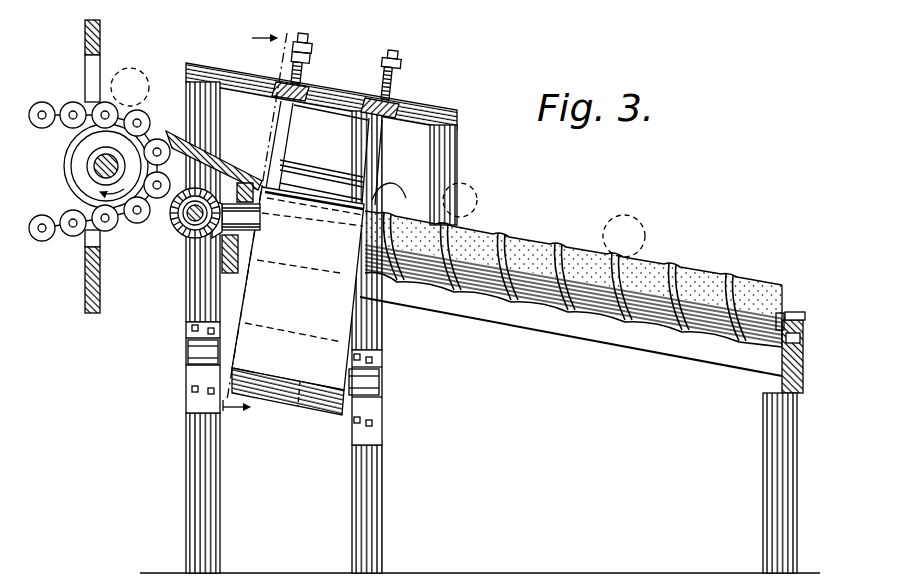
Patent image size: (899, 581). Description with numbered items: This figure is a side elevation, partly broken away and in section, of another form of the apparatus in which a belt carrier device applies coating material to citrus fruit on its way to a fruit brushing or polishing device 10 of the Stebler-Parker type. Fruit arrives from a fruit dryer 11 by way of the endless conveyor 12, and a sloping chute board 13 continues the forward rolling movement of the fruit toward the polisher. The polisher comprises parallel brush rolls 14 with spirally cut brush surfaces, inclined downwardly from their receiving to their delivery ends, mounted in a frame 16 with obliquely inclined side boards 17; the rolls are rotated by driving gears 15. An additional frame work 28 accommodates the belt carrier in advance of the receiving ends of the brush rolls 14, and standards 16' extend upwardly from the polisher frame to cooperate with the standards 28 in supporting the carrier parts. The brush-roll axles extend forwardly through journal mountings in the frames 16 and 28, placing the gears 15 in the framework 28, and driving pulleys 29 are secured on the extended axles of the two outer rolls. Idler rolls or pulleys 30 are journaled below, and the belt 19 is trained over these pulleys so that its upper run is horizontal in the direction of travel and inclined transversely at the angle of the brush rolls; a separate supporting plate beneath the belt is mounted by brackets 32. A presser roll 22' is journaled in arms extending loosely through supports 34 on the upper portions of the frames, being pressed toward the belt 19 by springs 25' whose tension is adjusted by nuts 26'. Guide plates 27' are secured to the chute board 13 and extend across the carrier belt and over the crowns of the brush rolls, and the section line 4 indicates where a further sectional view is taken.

The section line 4- 4 is at (263, 224).
The fruit brushing or polishing device 10 is at (540, 240).
The fruit dryer 11 is at (80, 88).
The endless conveyor 12 is at (143, 118).
The chute board 13 is at (166, 212).
The brush rolls 14 is at (608, 330).
The driving gears 15 is at (213, 247).
The frame 16 is at (384, 342).
The standards 16' is at (465, 175).
The side boards 17 is at (690, 355).
The belt 19 is at (270, 295).
The presser roll 22' is at (324, 152).
The springs 25' is at (329, 133).
The nuts 26' is at (346, 51).
The guide plates 27' is at (398, 179).
The additional frame work 28 is at (190, 457).
The driving pulleys 29 is at (378, 318).
The idler rolls or pulleys 30 is at (292, 403).
The brackets 32 is at (250, 202).
The supports 34 is at (281, 83).